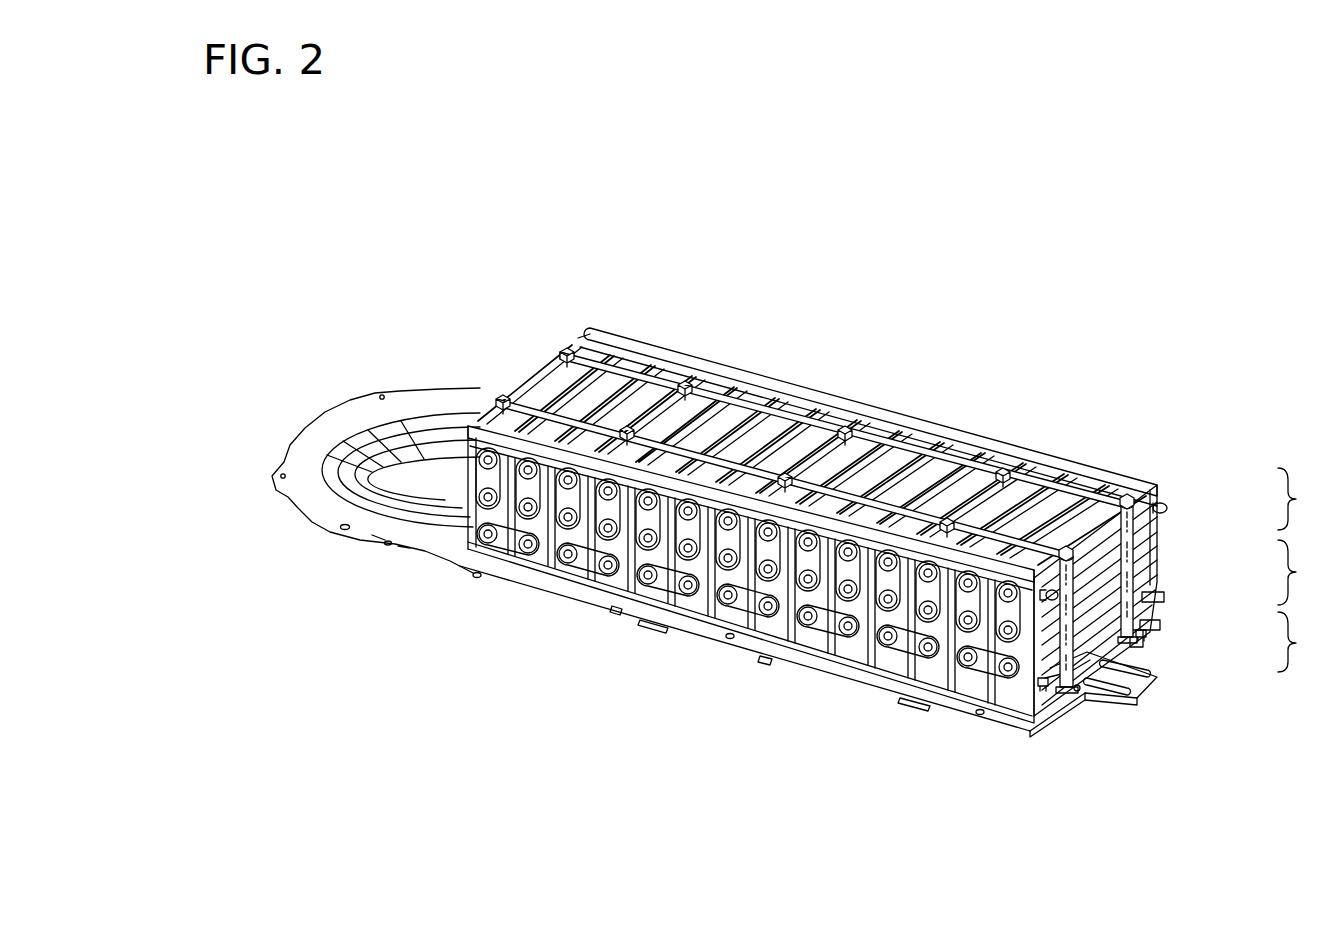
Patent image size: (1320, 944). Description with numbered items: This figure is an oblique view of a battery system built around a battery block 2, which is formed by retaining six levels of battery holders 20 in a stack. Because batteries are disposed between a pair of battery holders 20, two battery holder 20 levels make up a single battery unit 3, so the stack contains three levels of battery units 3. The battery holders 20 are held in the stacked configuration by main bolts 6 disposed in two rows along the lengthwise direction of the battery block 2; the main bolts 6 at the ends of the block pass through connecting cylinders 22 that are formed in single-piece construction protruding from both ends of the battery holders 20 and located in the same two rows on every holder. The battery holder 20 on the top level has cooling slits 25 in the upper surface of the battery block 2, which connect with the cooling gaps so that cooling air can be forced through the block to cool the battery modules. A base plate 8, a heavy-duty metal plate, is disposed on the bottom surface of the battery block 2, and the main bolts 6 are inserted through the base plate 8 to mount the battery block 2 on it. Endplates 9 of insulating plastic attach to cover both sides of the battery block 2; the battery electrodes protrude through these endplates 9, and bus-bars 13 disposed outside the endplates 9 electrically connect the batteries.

The battery block 2 is at (1145, 418).
The battery unit 3 is at (1297, 570).
The main bolt 6 is at (503, 395).
The base plate 8 is at (332, 503).
The endplate 9 is at (1147, 492).
The bus-bar 13 is at (480, 468).
The battery holder 20 is at (1157, 515).
The connecting cylinder 22 is at (1070, 690).
The cooling slit 25 is at (583, 381).